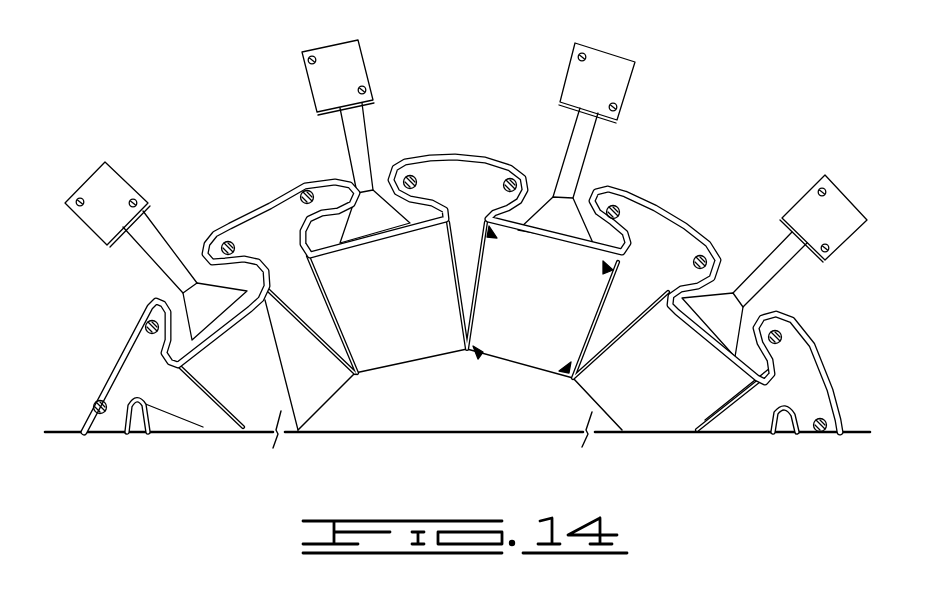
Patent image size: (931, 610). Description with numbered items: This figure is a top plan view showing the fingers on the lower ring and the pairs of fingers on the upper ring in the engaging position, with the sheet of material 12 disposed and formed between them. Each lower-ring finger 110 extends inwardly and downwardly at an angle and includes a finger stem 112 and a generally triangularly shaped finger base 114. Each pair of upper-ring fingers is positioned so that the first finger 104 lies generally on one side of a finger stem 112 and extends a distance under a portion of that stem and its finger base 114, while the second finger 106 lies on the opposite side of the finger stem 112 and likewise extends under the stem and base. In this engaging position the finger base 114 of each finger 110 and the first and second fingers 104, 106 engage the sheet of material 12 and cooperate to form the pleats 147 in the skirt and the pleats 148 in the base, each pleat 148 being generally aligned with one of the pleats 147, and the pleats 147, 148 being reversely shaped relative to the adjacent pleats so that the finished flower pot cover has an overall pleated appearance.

The sheet of material 12 is at (472, 162).
The first finger 104 is at (300, 196).
The second finger 106 is at (222, 243).
The finger 110 is at (143, 247).
The finger stem 112 is at (177, 275).
The finger base 114 is at (207, 312).
The pleat 147 is at (493, 238).
The pleat 148 is at (479, 352).